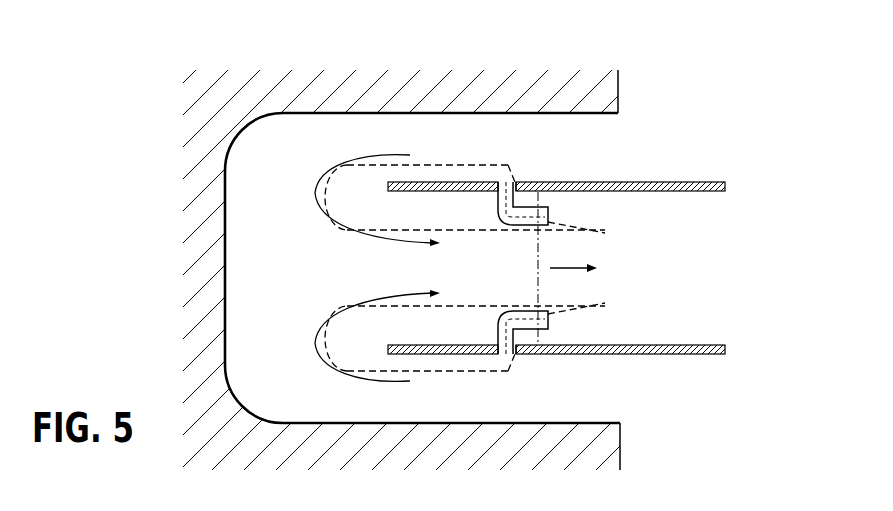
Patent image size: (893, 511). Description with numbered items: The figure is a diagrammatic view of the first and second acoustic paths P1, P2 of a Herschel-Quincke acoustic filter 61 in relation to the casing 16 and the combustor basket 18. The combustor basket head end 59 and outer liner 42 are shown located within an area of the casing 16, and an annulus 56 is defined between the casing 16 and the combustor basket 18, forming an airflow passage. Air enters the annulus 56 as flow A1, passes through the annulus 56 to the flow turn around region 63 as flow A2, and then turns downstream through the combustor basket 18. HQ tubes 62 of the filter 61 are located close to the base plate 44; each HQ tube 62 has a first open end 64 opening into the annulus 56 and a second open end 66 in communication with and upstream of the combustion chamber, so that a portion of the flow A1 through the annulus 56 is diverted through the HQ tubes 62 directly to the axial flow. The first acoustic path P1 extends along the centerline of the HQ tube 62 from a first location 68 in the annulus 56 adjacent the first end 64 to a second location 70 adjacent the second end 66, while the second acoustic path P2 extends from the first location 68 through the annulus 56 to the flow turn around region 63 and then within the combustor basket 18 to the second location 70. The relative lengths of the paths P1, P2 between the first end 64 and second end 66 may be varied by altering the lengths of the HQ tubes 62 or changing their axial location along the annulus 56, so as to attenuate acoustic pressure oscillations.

The casing 16 is at (405, 113).
The combustor basket 18 is at (375, 177).
The annulus 56 is at (352, 142).
The combustor outer liner 42 is at (708, 180).
The base plate 44 is at (548, 298).
The head end 59 is at (418, 366).
The Herschel-Quincke acoustic filter 61 is at (505, 150).
The HQ tube 62 is at (520, 193).
The flow turn around region 63 is at (315, 193).
The first open end 64 is at (515, 186).
The second open end 66 is at (548, 212).
The first location 68 is at (515, 182).
The second location 70 is at (600, 233).
The air flow entering the annulus A1 is at (580, 155).
The flow at the flow turn around region A2 is at (337, 180).
The first acoustic path P1 is at (500, 216).
The second acoustic path P2 is at (467, 167).